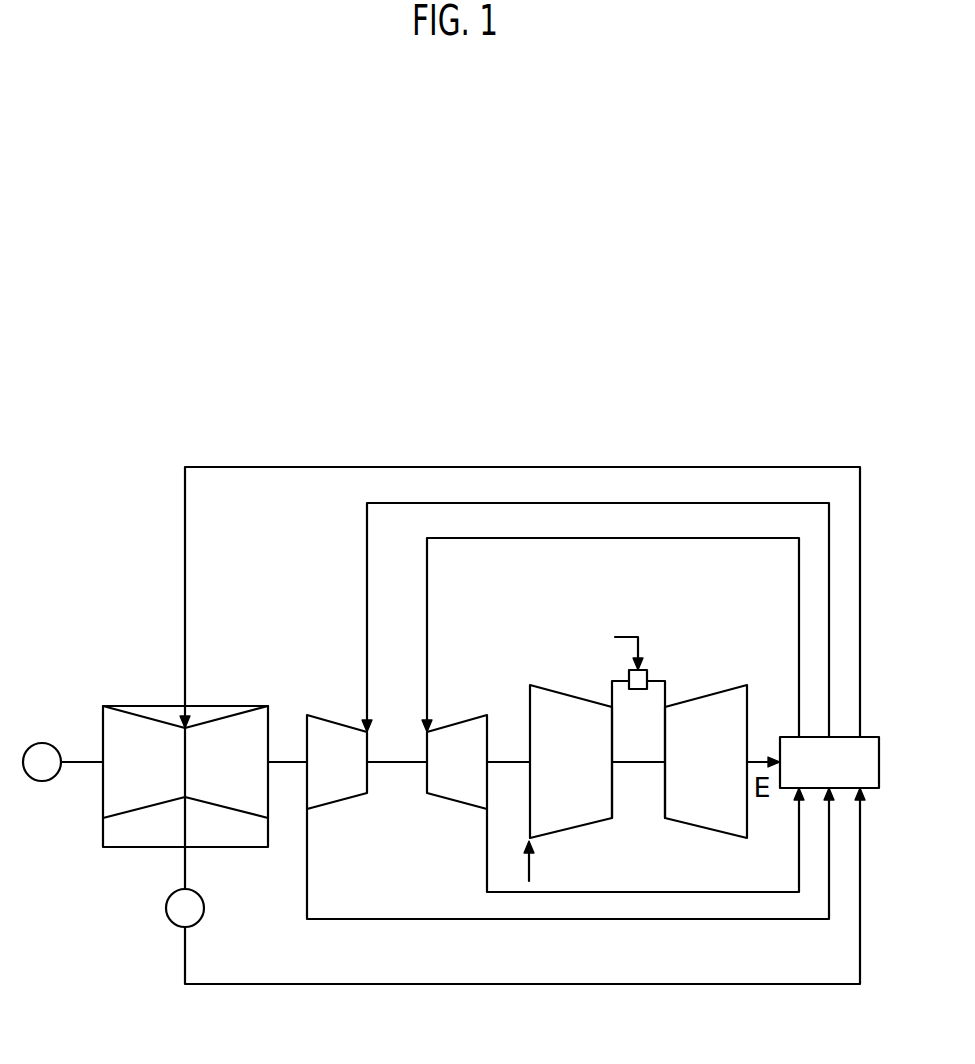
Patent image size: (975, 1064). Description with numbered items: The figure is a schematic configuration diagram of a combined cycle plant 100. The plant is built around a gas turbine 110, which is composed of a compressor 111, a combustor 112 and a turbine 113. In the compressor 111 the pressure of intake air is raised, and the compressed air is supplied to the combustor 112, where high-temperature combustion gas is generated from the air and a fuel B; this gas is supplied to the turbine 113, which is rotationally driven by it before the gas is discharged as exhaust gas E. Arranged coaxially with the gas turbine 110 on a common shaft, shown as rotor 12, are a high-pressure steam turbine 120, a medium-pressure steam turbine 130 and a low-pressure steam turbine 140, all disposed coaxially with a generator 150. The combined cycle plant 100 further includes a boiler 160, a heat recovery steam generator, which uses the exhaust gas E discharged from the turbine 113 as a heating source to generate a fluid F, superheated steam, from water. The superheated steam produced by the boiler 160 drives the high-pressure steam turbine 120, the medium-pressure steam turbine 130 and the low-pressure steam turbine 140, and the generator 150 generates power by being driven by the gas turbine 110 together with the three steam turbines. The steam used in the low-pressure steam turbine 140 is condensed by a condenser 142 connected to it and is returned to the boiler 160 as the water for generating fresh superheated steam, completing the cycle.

The combined cycle plant 100 is at (635, 440).
The gas turbine 110 is at (626, 719).
The compressor 111 is at (574, 673).
The combustor 112 is at (659, 662).
The turbine 113 is at (719, 671).
The rotor 12 is at (395, 765).
The high-pressure steam turbine 120 is at (464, 693).
The medium-pressure steam turbine 130 is at (331, 694).
The low-pressure steam turbine 140 is at (131, 680).
The condenser 142 is at (147, 902).
The generator 150 is at (47, 722).
The boiler 160 is at (876, 719).